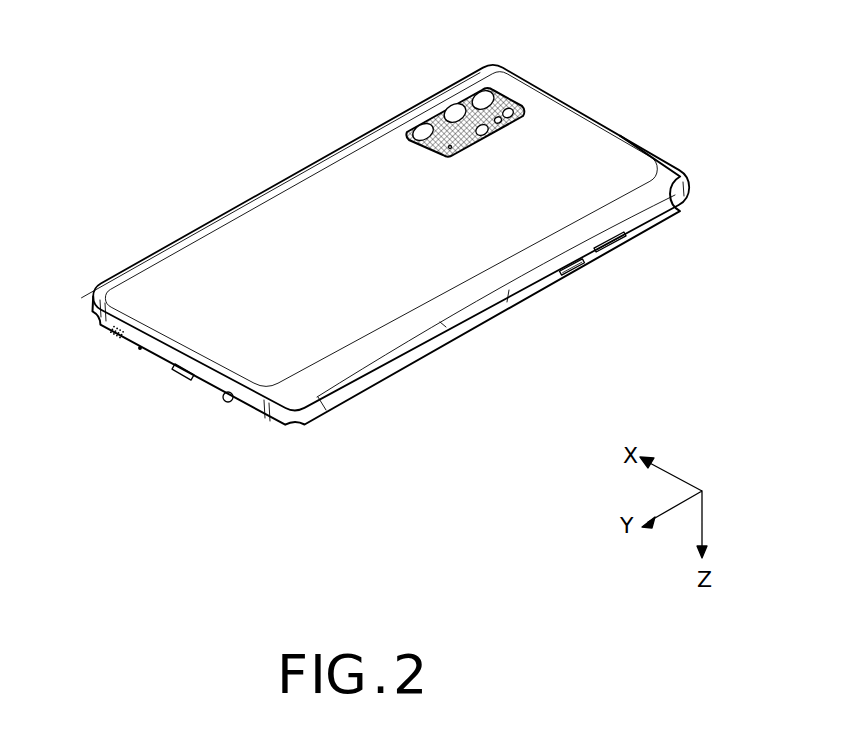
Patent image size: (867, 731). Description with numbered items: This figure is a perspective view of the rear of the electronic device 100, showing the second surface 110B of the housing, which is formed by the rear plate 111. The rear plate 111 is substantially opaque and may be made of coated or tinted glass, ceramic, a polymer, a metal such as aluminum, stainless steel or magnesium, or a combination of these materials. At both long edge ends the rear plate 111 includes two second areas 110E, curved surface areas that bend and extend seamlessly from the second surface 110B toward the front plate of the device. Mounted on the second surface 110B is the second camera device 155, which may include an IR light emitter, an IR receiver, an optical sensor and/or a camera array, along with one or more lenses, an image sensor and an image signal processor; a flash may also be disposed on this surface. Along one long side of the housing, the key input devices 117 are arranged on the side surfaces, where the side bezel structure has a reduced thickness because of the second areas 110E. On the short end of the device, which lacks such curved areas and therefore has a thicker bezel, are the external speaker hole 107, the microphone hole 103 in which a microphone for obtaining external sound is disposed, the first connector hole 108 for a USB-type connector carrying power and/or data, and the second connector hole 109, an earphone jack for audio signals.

The electronic device 100 is at (216, 73).
The microphone hole 103 is at (140, 350).
The external speaker hole 107 is at (112, 331).
The first connector hole 108 is at (180, 377).
The second connector hole 109 is at (228, 403).
The second surface 110B is at (336, 200).
The second areas 110E is at (262, 195).
The rear plate 111 is at (215, 278).
The key input devices 117 is at (573, 272).
The second camera device 155 is at (465, 100).